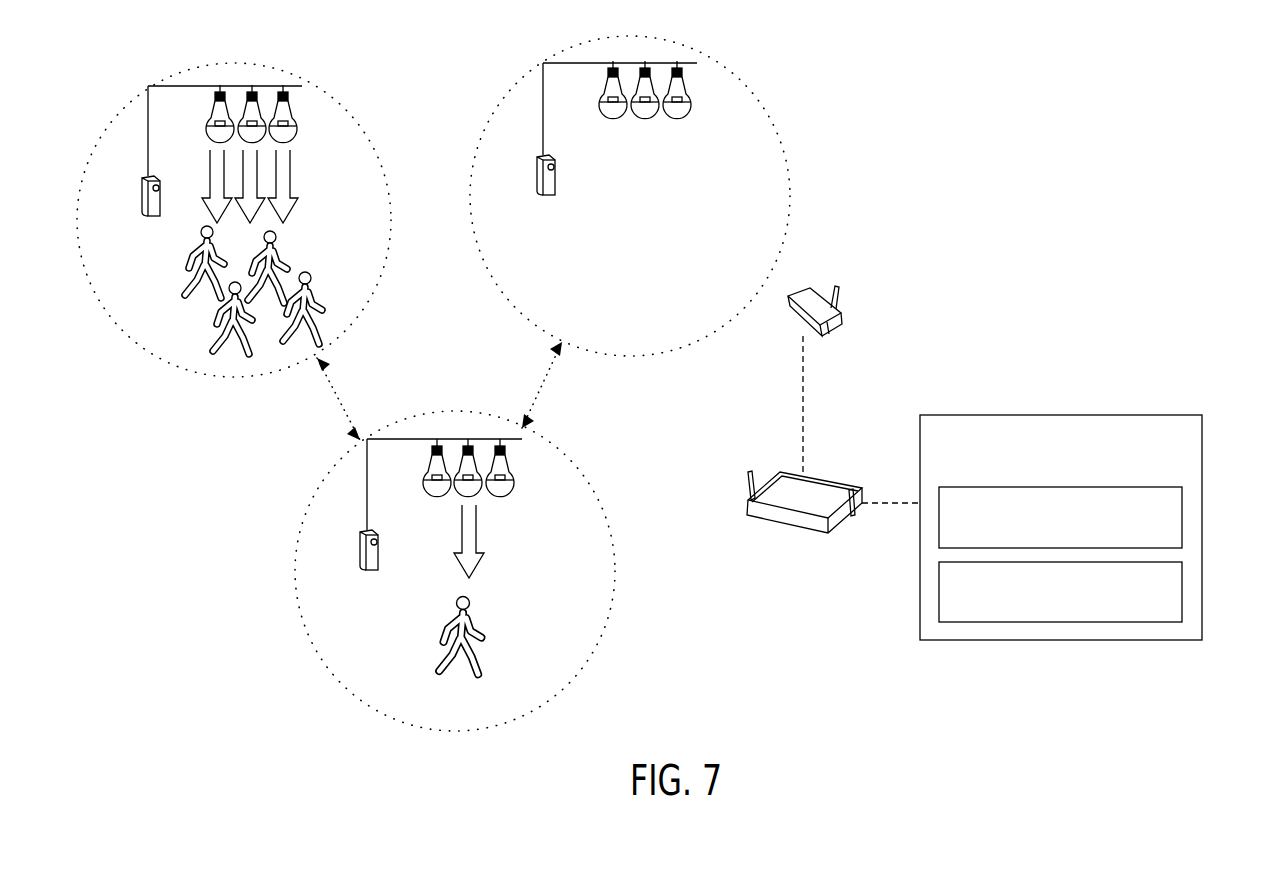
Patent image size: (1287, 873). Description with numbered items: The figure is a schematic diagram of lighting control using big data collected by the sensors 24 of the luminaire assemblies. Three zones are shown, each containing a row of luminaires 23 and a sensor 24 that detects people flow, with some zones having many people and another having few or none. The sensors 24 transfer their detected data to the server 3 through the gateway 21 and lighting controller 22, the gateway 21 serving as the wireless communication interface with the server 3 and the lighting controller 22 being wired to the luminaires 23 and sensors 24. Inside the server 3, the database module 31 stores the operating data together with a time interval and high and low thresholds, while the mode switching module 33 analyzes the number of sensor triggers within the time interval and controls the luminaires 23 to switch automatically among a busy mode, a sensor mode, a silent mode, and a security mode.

The server 3 is at (1088, 498).
The gateway 21 is at (818, 480).
The lighting controller 22 is at (840, 312).
The luminaire 23 is at (206, 127).
The sensor 24 is at (142, 188).
The database module 31 is at (1182, 518).
The mode switching module 33 is at (1182, 593).